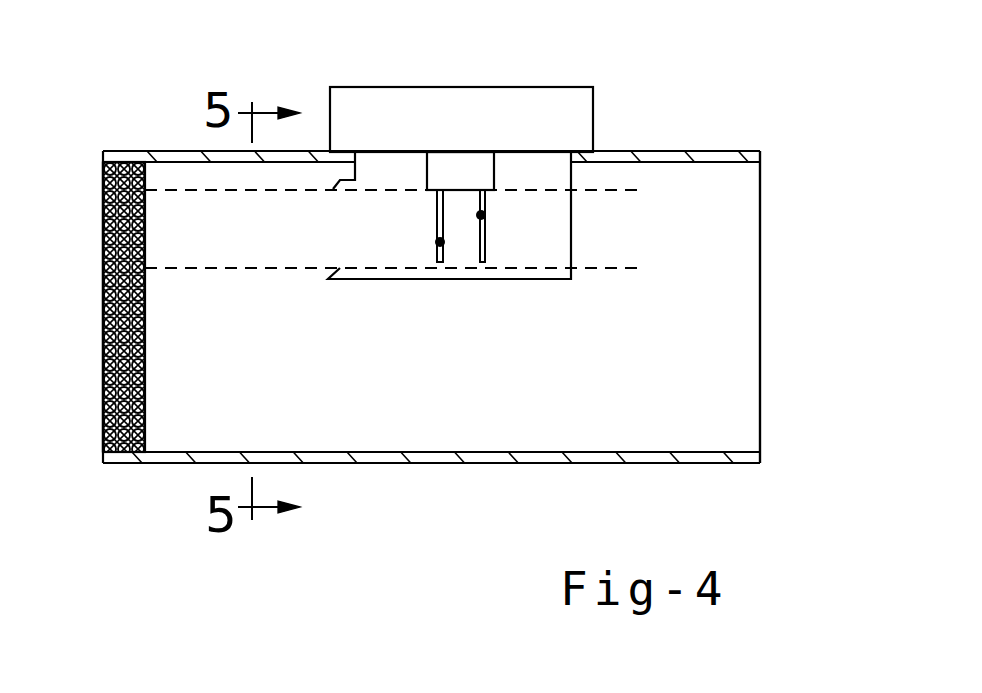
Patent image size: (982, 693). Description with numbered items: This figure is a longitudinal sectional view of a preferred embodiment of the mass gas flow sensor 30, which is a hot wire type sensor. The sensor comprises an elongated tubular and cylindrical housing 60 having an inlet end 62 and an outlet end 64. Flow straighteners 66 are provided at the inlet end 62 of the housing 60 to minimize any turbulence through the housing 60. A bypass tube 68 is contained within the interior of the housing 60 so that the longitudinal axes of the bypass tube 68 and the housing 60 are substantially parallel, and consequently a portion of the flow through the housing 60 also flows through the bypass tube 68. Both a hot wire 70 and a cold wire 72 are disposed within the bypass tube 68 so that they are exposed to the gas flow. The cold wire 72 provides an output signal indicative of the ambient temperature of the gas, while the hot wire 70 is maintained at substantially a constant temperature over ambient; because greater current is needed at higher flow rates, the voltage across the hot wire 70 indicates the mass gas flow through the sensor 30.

The mass gas flow sensor 30 is at (722, 100).
The housing 60 is at (675, 453).
The inlet end 62 is at (103, 410).
The outlet end 64 is at (762, 453).
The flow straighteners 66 is at (120, 182).
The bypass tube 68 is at (389, 279).
The hot wire 70 is at (441, 242).
The cold wire 72 is at (481, 215).